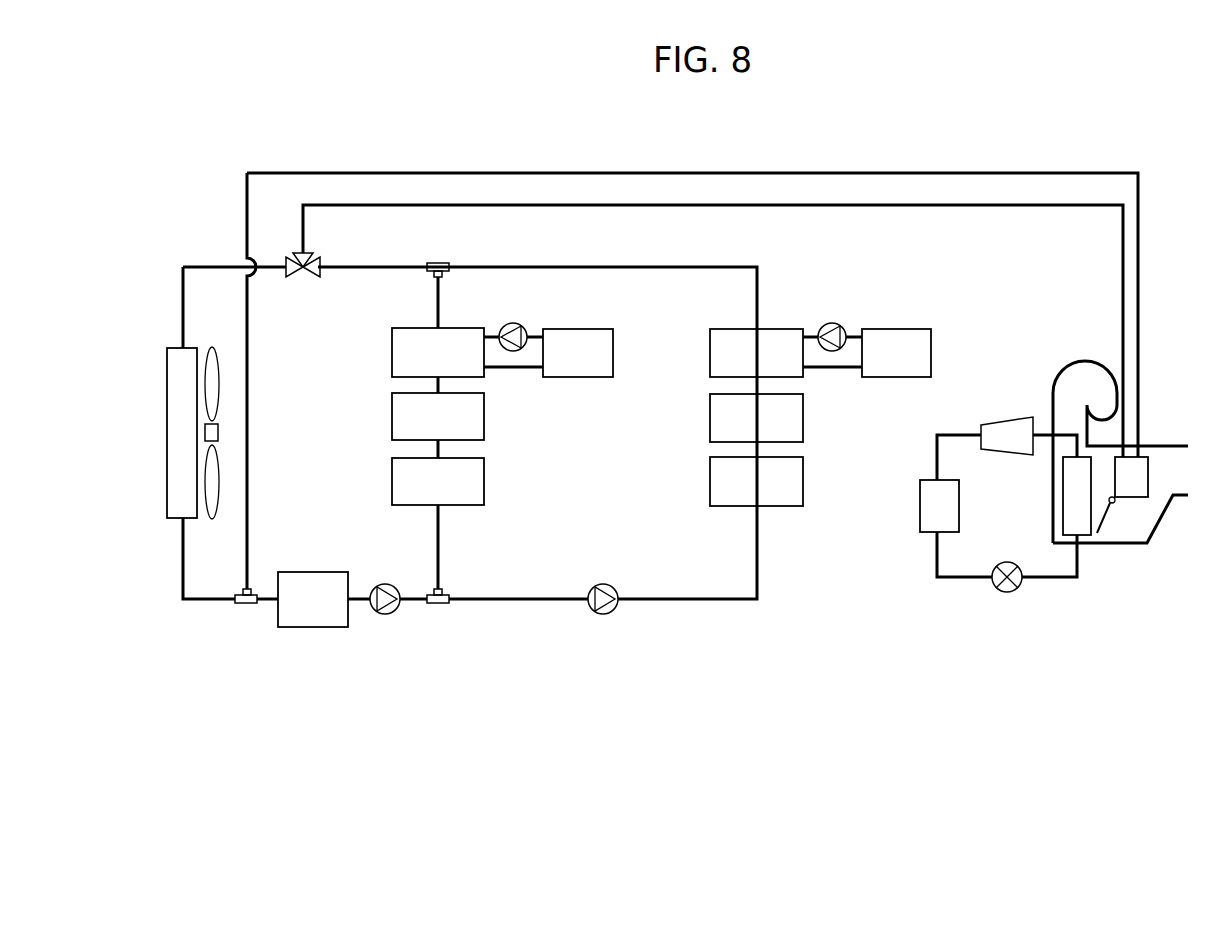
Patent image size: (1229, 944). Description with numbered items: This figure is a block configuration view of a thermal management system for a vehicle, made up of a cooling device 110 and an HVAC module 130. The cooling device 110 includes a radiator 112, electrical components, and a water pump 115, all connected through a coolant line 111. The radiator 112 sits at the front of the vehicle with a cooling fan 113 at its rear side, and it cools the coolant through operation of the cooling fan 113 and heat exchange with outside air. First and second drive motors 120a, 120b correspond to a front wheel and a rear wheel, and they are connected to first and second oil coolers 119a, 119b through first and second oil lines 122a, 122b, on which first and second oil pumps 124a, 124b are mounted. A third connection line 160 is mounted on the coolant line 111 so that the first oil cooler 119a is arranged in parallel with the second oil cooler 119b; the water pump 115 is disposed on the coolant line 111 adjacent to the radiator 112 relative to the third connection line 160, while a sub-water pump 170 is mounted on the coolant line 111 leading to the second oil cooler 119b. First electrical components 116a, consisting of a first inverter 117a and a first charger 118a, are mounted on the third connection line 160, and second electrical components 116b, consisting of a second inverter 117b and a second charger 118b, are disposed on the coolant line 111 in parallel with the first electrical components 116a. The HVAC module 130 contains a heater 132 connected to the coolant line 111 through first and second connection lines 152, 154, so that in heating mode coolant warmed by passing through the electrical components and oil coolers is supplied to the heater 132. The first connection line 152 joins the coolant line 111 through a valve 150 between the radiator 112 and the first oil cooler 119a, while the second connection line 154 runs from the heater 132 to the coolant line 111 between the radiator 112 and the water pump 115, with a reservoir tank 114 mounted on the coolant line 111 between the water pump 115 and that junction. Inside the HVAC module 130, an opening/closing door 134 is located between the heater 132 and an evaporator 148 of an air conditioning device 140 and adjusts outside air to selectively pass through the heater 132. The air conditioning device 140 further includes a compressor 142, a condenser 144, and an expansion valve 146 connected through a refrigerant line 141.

The cooling device 110 is at (190, 246).
The coolant line 111 is at (685, 601).
The radiator 112 is at (167, 432).
The cooling fan 113 is at (212, 346).
The reservoir tank 114 is at (313, 628).
The water pump 115 is at (385, 615).
The first electrical components 116a is at (382, 449).
The second electrical components 116b is at (700, 450).
The first inverter 117a is at (392, 417).
The second inverter 117b is at (710, 417).
The first charger 118a is at (409, 481).
The second charger 118b is at (727, 481).
The first oil cooler 119a is at (392, 352).
The second oil cooler 119b is at (710, 352).
The first drive motor 120a is at (578, 378).
The second drive motor 120b is at (897, 378).
The first oil line 122a is at (492, 340).
The second oil line 122b is at (811, 340).
The first oil pump 124a is at (510, 323).
The second oil pump 124b is at (829, 323).
The HVAC module 130 is at (1163, 535).
The heater 132 is at (1148, 480).
The opening/closing door 134 is at (1112, 515).
The air conditioning device 140 is at (988, 516).
The refrigerant line 141 is at (937, 554).
The compressor 142 is at (1007, 421).
The condenser 144 is at (920, 506).
The expansion valve 146 is at (1007, 593).
The evaporator 148 is at (1085, 537).
The valve 150 is at (318, 278).
The first connection line 152 is at (832, 207).
The second connection line 154 is at (832, 171).
The third connection line 160 is at (438, 545).
The sub-water pump 170 is at (603, 615).